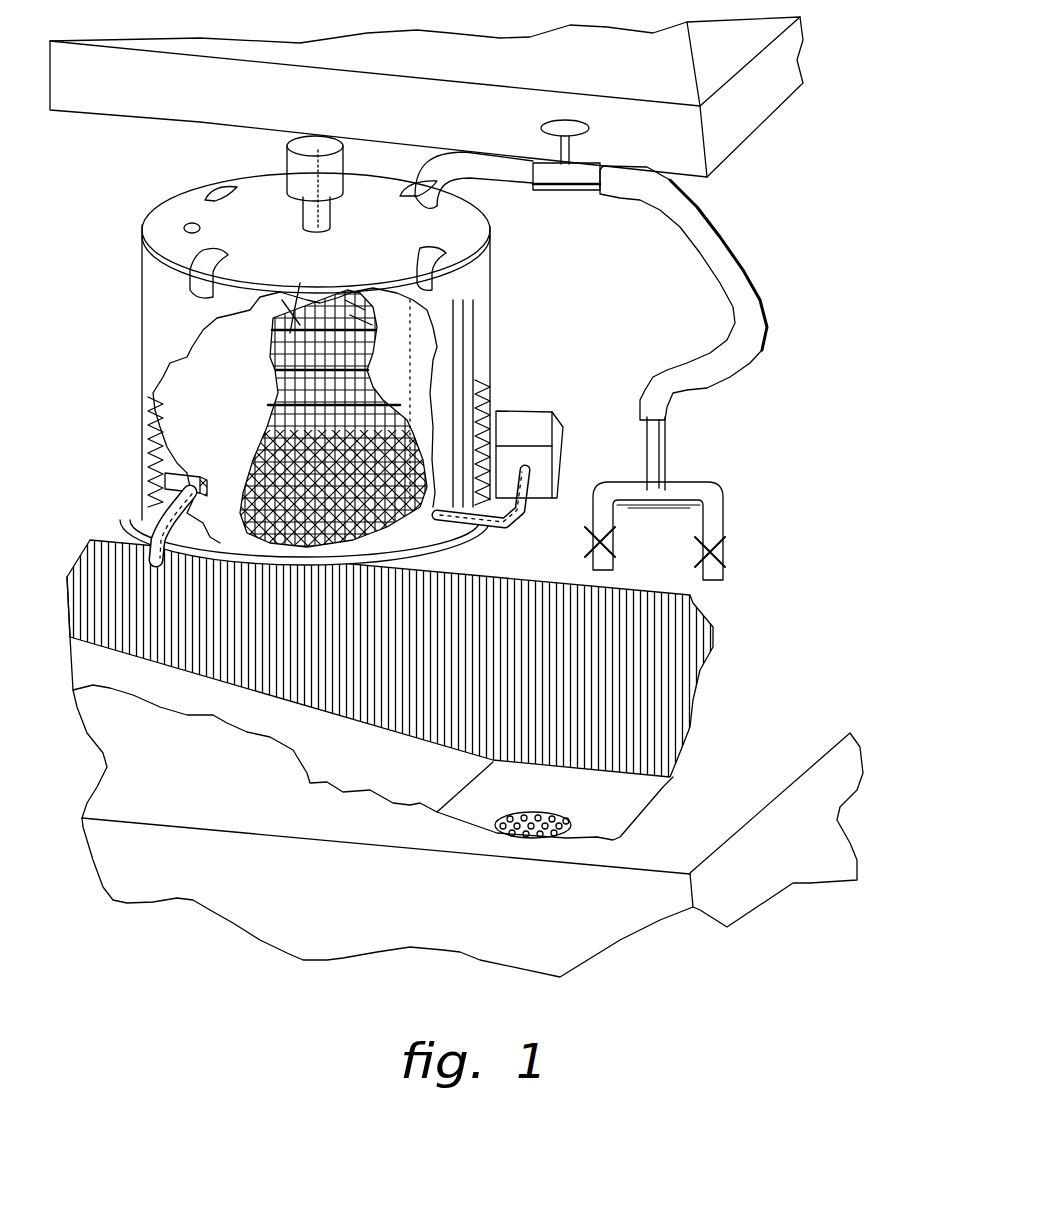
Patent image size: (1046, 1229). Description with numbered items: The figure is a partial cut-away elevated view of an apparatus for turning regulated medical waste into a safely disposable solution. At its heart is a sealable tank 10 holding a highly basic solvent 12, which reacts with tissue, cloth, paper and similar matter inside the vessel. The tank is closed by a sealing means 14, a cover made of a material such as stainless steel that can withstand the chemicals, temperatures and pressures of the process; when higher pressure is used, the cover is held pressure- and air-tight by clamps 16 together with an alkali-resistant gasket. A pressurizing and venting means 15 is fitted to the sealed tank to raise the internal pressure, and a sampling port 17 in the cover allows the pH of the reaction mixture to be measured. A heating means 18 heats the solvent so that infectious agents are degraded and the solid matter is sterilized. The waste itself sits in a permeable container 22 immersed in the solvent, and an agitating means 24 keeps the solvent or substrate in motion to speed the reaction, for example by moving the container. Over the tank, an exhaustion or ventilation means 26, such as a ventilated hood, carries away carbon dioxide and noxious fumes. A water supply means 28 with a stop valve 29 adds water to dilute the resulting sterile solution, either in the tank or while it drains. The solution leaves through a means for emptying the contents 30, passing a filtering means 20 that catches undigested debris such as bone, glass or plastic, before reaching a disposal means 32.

The sealable tank 10 is at (503, 380).
The highly basic solvent 12 is at (268, 380).
The sealing means 14 is at (162, 233).
The pressurizing and venting means 15 is at (305, 177).
The clamps 16 is at (141, 287).
The sampling port 17 is at (191, 222).
The heating means 18 is at (477, 283).
The filtering means 20 is at (208, 442).
The permeable container 22 is at (290, 333).
The agitating means 24 is at (543, 408).
The exhaustion or ventilation means 26 is at (735, 125).
The water supply means 28 is at (762, 347).
The stop valve 29 is at (547, 125).
The means for emptying the contents 30 is at (148, 523).
The disposal means 32 is at (597, 797).